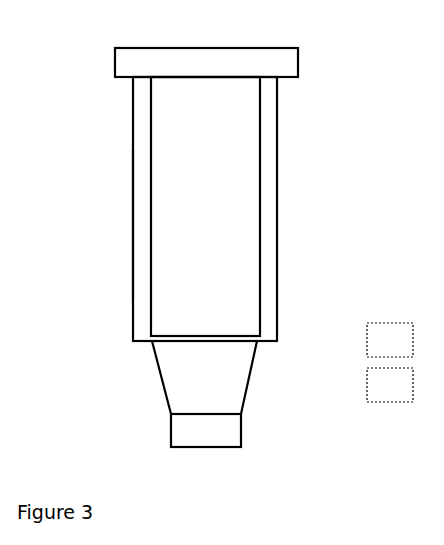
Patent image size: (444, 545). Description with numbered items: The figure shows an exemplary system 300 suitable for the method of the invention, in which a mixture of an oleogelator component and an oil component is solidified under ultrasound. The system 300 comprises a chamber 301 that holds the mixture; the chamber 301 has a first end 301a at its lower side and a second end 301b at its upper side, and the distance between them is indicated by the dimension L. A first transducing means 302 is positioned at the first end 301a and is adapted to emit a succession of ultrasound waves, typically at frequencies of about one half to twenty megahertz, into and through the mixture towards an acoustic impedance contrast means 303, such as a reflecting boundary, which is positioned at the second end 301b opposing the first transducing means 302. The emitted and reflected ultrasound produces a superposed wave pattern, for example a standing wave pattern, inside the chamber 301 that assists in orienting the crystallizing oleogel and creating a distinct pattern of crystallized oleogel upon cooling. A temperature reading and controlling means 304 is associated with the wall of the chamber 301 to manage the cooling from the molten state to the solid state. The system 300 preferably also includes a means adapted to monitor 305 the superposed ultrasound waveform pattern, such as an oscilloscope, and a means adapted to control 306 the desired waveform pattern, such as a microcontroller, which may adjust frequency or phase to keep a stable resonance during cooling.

The system 300 is at (85, 56).
The chamber 301 is at (180, 153).
The first end 301a is at (176, 319).
The second end 301b is at (176, 93).
The first transducing means 302 is at (178, 373).
The acoustic impedance contrast means 303 is at (248, 63).
The temperature reading and controlling means 304 is at (143, 235).
The means adapted to monitor 305 is at (390, 340).
The means adapted to control 306 is at (390, 385).
The length of container body L is at (330, 82).